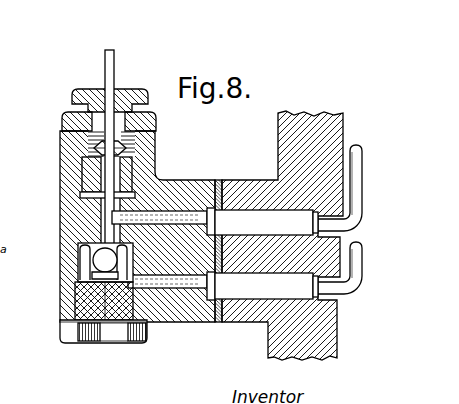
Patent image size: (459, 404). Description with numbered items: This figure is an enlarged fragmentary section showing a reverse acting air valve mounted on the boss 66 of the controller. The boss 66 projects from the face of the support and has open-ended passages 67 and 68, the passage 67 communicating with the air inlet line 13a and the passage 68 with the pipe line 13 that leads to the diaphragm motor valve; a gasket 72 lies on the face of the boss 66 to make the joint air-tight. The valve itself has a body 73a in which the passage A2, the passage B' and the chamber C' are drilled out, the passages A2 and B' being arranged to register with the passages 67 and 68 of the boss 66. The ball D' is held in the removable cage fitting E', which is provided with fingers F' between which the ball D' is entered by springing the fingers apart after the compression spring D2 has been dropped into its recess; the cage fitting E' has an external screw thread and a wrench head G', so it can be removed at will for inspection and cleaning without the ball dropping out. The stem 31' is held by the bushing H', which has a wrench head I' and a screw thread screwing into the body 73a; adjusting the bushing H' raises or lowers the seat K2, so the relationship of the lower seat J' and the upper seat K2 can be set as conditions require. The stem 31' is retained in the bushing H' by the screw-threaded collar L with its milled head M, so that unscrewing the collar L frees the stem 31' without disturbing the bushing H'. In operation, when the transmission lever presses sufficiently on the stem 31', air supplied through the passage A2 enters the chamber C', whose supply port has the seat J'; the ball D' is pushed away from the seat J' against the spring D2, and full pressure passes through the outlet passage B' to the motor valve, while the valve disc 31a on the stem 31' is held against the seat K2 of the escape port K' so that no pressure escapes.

The stem 31' is at (91, 148).
The milled head M is at (143, 90).
The wrench head I' is at (61, 120).
The bushing H' is at (77, 160).
The valve disc 31a is at (82, 168).
The upper seat K2 is at (82, 193).
The screw-threaded collar L is at (156, 118).
The escape port K' is at (134, 142).
The lower seat J' is at (144, 219).
The outlet passage B' is at (210, 240).
The gasket 72 is at (222, 188).
The pipe line 13 is at (357, 146).
The passage 68 is at (215, 221).
The passage 67 is at (223, 286).
The air inlet line 13a is at (357, 298).
The boss 66 is at (252, 324).
The body 73a is at (201, 328).
The passage A2 is at (173, 290).
The compression spring D2 is at (98, 314).
The wrench head G' is at (114, 361).
The cage fitting E' is at (80, 337).
The ball D' is at (75, 301).
The fingers F' is at (67, 268).
The chamber C' is at (54, 262).